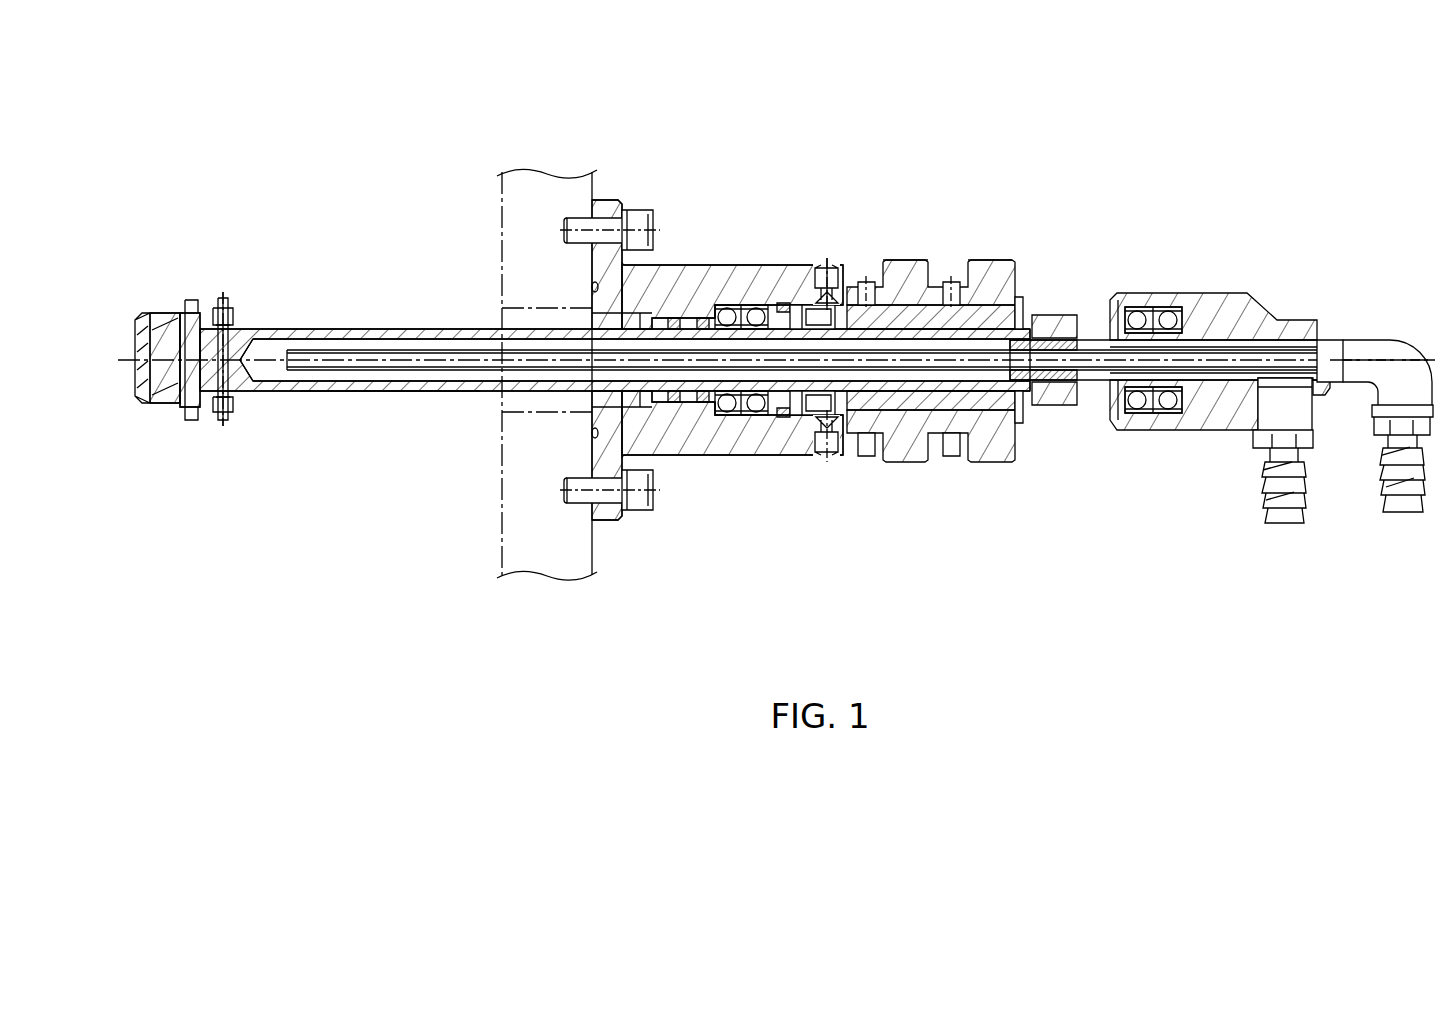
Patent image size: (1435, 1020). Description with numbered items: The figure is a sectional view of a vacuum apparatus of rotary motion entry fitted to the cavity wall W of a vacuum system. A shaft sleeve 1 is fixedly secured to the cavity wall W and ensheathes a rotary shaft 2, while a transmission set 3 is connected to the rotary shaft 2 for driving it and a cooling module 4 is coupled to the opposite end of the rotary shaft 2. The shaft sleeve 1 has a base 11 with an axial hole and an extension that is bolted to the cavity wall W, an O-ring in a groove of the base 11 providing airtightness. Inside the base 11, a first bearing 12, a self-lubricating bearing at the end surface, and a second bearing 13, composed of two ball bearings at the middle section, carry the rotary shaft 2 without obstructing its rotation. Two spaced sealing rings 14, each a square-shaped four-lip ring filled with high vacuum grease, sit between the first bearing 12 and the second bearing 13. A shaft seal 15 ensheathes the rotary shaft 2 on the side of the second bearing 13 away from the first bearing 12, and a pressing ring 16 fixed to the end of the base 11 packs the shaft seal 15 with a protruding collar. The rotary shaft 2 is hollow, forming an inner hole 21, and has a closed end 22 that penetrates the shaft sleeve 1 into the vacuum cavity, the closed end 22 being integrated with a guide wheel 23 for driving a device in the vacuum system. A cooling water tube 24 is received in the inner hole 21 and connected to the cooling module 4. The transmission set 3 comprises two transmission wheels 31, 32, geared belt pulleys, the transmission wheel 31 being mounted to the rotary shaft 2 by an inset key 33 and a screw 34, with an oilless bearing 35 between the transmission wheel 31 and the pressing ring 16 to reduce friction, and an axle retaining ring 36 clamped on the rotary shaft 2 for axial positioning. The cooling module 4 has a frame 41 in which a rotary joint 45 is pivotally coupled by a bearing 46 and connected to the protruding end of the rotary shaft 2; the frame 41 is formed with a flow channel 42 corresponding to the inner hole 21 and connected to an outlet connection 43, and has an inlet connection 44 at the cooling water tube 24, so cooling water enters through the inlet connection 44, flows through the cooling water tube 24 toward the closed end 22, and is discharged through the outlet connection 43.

The shaft sleeve 1 is at (745, 240).
The rotary shaft 2 is at (360, 329).
The transmission set 3 is at (970, 240).
The cooling module 4 is at (1220, 272).
The base 11 is at (715, 265).
The first bearing 12 is at (596, 400).
The second bearing 13 is at (732, 415).
The sealing ring 14 is at (674, 318).
The shaft seal 15 is at (785, 262).
The pressing ring 16 is at (853, 265).
The inner hole 21 is at (390, 381).
The closed end 22 is at (180, 375).
The guide wheel 23 is at (152, 313).
The cooling water tube 24 is at (445, 350).
The transmission wheel 31 is at (903, 462).
The transmission wheel 32 is at (997, 445).
The inset key 33 is at (1020, 297).
The screw 34 is at (880, 265).
The oilless bearing 35 is at (842, 455).
The axle retaining ring 36 is at (1050, 455).
The frame 41 is at (1195, 293).
The flow channel 42 is at (1232, 355).
The outlet connection 43 is at (1266, 475).
The inlet connection 44 is at (1388, 505).
The rotary joint 45 is at (1088, 405).
The bearing 46 is at (1130, 307).
The cavity wall W is at (497, 225).